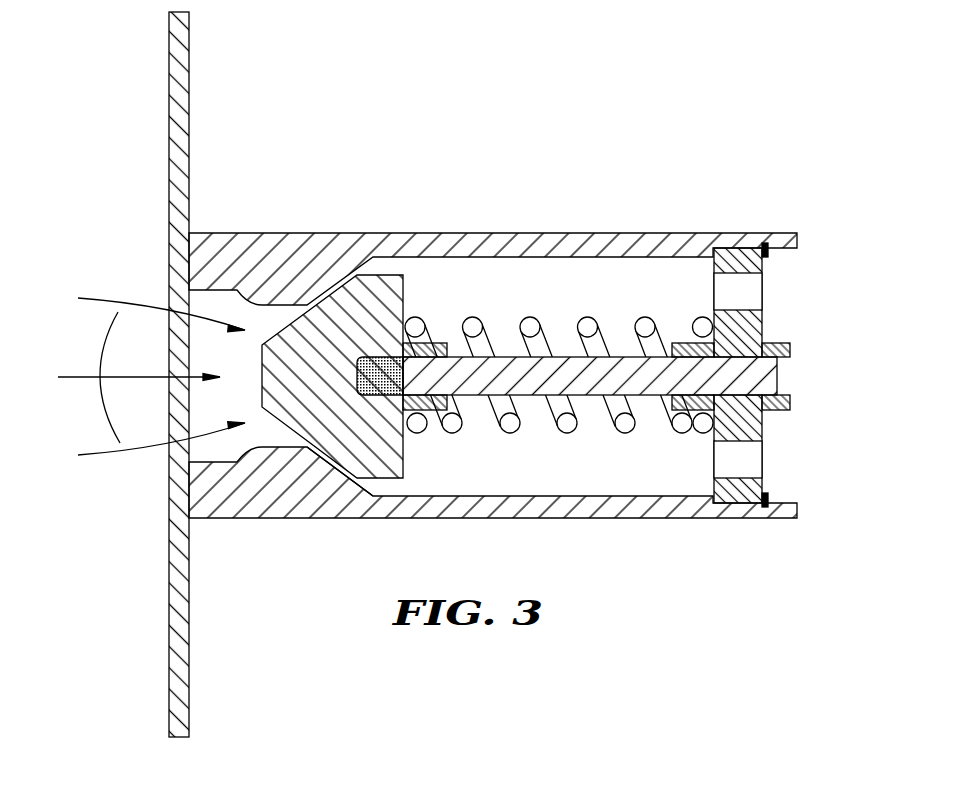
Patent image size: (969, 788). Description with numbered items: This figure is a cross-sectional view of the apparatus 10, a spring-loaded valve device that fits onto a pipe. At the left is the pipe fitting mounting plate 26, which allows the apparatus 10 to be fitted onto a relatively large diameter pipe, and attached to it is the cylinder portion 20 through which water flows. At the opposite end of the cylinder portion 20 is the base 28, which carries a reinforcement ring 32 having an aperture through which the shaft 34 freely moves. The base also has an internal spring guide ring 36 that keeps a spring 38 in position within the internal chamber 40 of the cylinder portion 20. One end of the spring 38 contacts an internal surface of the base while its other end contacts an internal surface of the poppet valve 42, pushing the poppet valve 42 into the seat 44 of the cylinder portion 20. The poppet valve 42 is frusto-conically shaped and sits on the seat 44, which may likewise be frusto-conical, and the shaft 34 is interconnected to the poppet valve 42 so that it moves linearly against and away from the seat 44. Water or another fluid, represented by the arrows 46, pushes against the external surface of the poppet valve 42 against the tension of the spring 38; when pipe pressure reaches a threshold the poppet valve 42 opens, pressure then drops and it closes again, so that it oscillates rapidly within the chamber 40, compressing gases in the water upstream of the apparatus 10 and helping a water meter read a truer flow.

The apparatus 10 is at (350, 192).
The cylinder portion 20 is at (583, 248).
The pipe fitting mounting plate 26 is at (173, 116).
The base 28 is at (753, 323).
The reinforcement ring 32 is at (788, 407).
The shaft 34 is at (775, 377).
The internal spring guide ring 36 is at (677, 343).
The spring 38 is at (627, 433).
The internal chamber 40 is at (508, 293).
The poppet valve 42 is at (357, 457).
The seat 44 is at (320, 450).
The arrows 46 is at (137, 377).